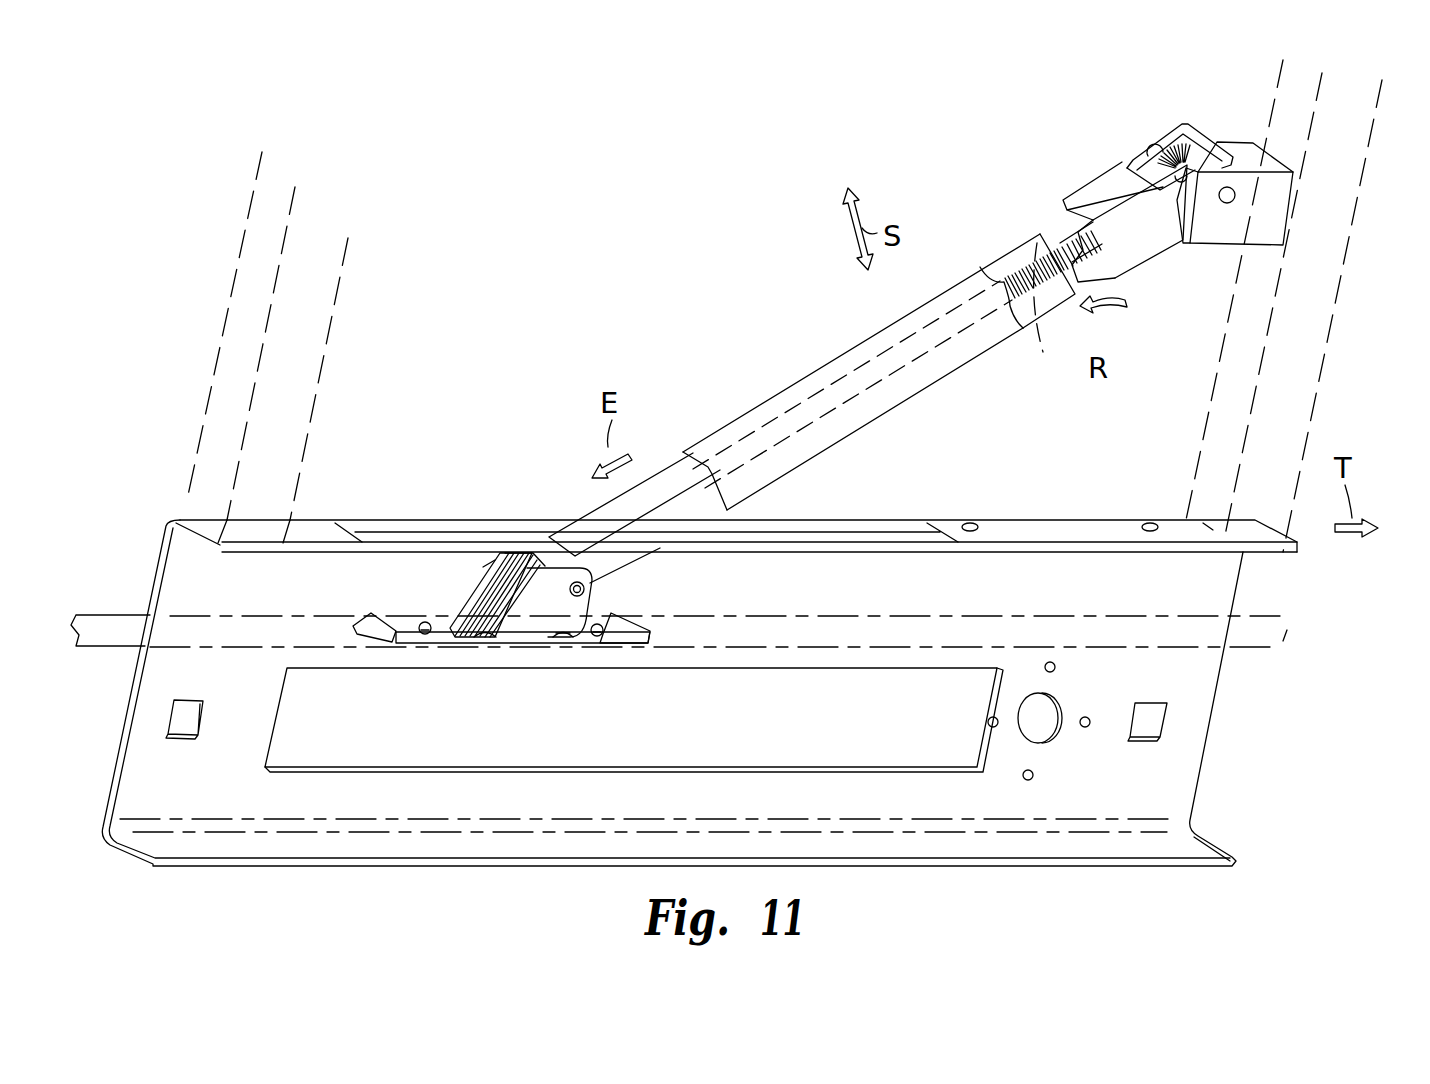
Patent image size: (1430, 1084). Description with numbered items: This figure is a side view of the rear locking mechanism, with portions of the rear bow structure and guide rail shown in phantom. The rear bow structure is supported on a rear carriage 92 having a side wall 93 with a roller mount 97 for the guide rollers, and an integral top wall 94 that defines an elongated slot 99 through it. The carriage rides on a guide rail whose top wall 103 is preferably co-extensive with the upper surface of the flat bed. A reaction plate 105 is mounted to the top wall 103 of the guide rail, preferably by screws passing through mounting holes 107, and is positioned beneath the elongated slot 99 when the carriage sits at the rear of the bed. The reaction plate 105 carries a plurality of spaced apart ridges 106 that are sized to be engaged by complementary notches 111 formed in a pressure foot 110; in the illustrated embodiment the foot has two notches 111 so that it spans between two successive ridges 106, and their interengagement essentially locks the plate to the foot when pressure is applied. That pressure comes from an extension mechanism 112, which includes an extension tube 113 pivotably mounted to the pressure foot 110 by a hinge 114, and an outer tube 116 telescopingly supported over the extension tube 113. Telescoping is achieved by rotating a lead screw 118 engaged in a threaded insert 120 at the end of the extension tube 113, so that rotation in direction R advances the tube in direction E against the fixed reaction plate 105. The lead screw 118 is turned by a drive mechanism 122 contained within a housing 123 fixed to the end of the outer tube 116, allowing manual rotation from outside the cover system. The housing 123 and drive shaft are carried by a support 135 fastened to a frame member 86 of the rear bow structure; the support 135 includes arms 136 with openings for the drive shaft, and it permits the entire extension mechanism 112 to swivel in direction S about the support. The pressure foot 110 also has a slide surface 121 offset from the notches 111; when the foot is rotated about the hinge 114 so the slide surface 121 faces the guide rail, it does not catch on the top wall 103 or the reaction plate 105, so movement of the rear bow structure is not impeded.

The frame member 86 is at (1293, 390).
The rear carriage 92 is at (715, 650).
The side wall 93 is at (1190, 679).
The top wall 94 is at (1256, 551).
The roller mount 97 is at (200, 717).
The elongated slot 99 is at (405, 522).
The top wall of the guide rail 103 is at (848, 612).
The reaction plate 105 is at (403, 618).
The ridges 106 is at (365, 610).
The mounting holes 107 is at (421, 636).
The pressure foot 110 is at (548, 566).
The notches 111 is at (492, 565).
The extension mechanism 112 is at (823, 365).
The extension tube 113 is at (657, 480).
The hinge 114 is at (582, 589).
The outer tube 116 is at (1123, 260).
The lead screw 118 is at (1058, 236).
The threaded insert 120 is at (1044, 352).
The slide surface 121 is at (477, 602).
The drive mechanism 122 is at (1137, 146).
The housing 123 is at (1237, 197).
The support 135 is at (1300, 229).
The arms 136 is at (1208, 230).